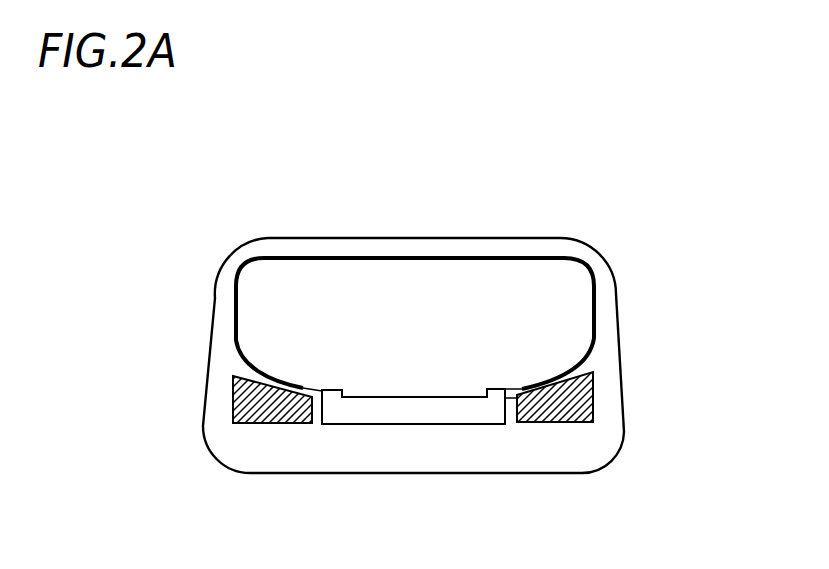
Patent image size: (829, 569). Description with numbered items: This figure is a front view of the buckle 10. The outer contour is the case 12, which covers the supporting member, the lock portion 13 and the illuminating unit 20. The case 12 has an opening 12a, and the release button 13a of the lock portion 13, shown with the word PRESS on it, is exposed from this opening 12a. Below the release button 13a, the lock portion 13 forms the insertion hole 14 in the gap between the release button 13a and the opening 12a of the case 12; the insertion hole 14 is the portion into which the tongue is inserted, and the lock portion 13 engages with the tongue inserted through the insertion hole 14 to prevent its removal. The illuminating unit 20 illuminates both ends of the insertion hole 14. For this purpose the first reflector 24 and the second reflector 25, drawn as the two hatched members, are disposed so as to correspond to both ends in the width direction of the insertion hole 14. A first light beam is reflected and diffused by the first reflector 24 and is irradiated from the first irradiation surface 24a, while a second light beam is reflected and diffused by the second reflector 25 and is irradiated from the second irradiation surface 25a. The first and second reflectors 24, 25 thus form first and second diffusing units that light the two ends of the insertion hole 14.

The buckle 10 is at (548, 157).
The case 12 is at (430, 250).
The opening 12a is at (594, 308).
The lock portion 13 is at (260, 286).
The release button 13a is at (522, 274).
The insertion hole 14 is at (397, 415).
The illuminating unit 20 is at (224, 362).
The first reflector 24 is at (609, 381).
The first irradiation surface 24a is at (595, 399).
The second reflector 25 is at (214, 380).
The second irradiation surface 25a is at (233, 405).